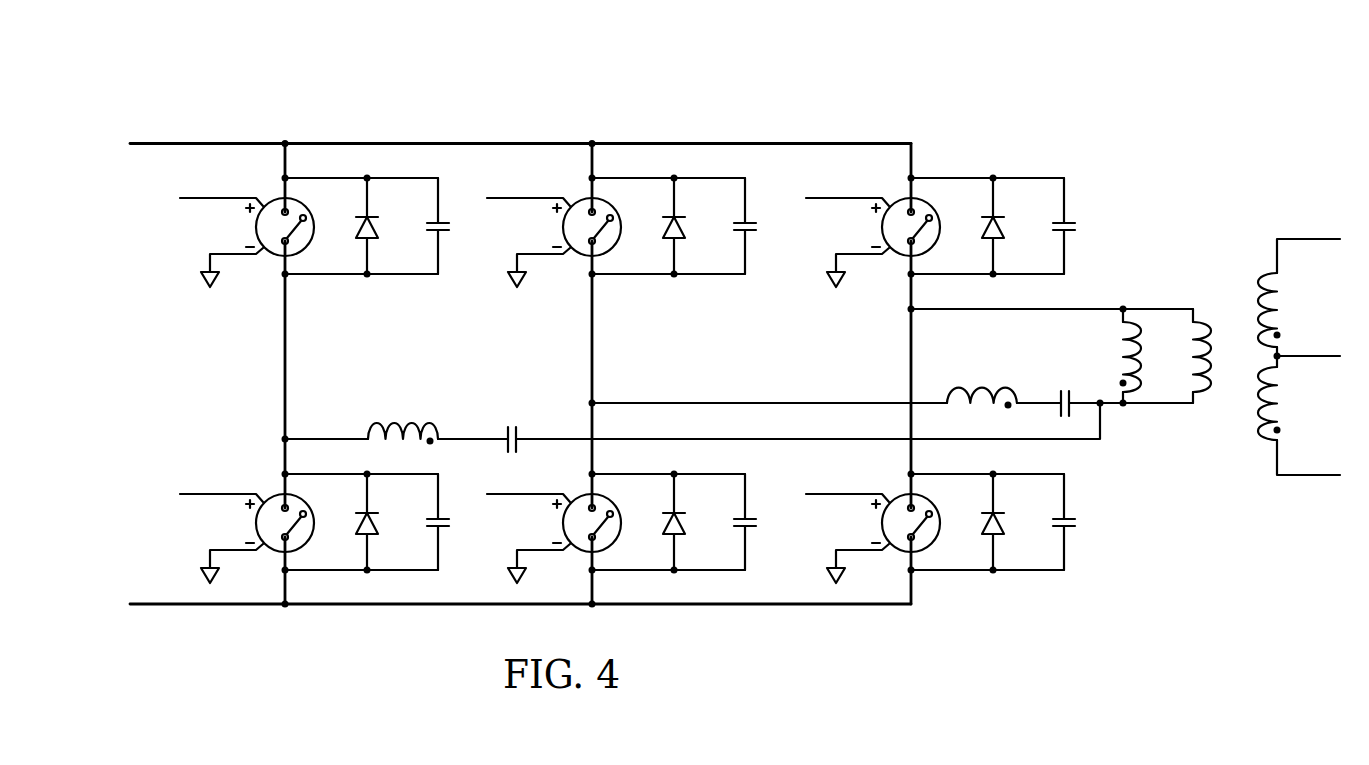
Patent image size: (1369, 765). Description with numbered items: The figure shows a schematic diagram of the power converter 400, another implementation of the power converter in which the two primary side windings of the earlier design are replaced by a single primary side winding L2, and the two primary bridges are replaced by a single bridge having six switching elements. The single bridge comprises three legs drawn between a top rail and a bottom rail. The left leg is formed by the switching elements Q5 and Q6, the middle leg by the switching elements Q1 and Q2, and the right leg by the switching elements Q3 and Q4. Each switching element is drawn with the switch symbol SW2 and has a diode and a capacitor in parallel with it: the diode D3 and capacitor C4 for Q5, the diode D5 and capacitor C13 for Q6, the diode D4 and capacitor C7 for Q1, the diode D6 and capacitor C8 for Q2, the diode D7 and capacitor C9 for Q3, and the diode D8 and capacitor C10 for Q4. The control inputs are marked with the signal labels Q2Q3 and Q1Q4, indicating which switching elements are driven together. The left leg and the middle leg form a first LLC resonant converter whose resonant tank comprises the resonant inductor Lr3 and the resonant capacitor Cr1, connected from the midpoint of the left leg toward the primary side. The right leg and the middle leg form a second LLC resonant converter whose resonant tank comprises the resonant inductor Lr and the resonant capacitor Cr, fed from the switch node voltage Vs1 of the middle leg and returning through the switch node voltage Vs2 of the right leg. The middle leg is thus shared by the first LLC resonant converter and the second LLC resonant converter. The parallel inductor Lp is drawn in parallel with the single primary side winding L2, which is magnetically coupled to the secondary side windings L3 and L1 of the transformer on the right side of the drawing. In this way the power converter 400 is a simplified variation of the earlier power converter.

The power converter 400 is at (139, 93).
The switching element Q1 is at (626, 231).
The switching element Q2 is at (626, 527).
The switching element Q3 is at (945, 231).
The switching element Q4 is at (945, 527).
The switching element Q5 is at (319, 231).
The switching element Q6 is at (319, 527).
The switch symbol SW2 is at (646, 346).
The diode D3 is at (384, 226).
The diode D4 is at (691, 226).
The diode D5 is at (384, 522).
The diode D6 is at (691, 522).
The diode D7 is at (1010, 226).
The diode D8 is at (1010, 522).
The capacitor C4 is at (454, 226).
The capacitor C7 is at (761, 226).
The capacitor C8 is at (761, 522).
The capacitor C9 is at (1080, 226).
The capacitor C10 is at (1086, 522).
The capacitor C13 is at (460, 522).
The control signal Q2Q3 is at (534, 335).
The control signal Q1Q4 is at (534, 335).
The switch node voltage Vs1 is at (768, 370).
The switch node voltage Vs2 is at (1051, 332).
The resonant inductor Lr3 is at (360, 440).
The resonant capacitor Cr1 is at (769, 426).
The resonant inductor Lr is at (982, 405).
The resonant capacitor Cr is at (1105, 392).
The parallel inductor Lp is at (1124, 355).
The primary side winding L2 is at (1194, 356).
The secondary side winding L3 is at (1299, 303).
The secondary side winding L1 is at (1299, 421).